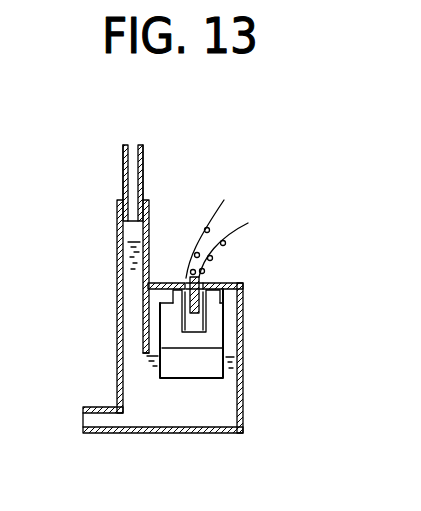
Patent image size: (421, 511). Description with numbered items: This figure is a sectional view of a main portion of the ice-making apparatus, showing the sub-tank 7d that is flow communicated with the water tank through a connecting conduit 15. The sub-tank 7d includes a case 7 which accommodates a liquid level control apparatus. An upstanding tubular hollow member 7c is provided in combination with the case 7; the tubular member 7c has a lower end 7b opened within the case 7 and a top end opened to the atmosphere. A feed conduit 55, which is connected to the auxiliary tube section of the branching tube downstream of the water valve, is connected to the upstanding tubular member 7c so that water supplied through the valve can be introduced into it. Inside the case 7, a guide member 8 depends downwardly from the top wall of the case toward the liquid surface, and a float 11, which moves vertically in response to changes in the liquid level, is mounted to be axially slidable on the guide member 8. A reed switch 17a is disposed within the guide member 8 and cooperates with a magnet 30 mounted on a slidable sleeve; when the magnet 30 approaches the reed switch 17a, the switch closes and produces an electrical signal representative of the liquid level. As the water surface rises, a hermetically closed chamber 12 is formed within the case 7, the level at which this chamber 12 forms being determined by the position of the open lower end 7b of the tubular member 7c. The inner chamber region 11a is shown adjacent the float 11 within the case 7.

The feed conduit 55 is at (133, 156).
The upstanding tubular hollow member 7c is at (116, 258).
The hermetically closed chamber 12 is at (158, 291).
The reed switch 17a is at (214, 275).
The magnet 30 is at (209, 294).
The guide member 8 is at (206, 316).
The inner chamber 11a is at (228, 342).
The float 11 is at (170, 368).
The sub-tank 7d is at (244, 377).
The case 7 is at (246, 409).
The connecting conduit 15 is at (93, 433).
The lower end 7b is at (137, 358).